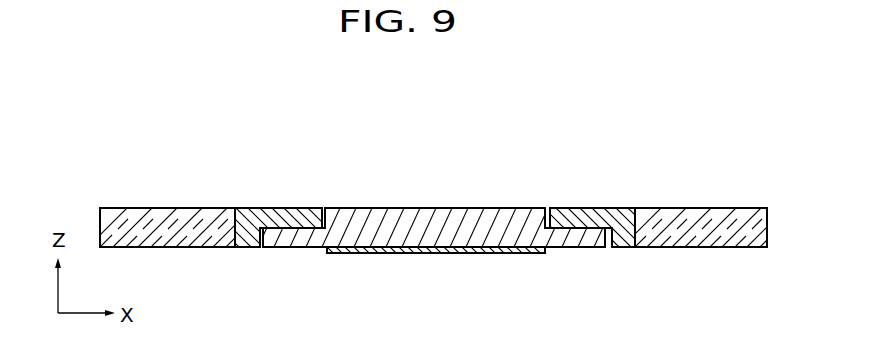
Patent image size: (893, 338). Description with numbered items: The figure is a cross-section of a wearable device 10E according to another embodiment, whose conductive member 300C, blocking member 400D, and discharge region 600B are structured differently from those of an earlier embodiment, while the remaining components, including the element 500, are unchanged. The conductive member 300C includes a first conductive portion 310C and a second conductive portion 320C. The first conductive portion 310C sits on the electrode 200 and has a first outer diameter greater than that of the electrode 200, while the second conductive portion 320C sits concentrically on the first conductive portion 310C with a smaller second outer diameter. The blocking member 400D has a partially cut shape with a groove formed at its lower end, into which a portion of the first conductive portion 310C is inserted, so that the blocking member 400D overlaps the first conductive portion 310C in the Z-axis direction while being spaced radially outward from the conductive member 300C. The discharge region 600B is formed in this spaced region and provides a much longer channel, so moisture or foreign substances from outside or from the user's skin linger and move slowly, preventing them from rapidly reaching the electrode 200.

The wearable device 10E is at (117, 116).
The electrode 200 is at (438, 253).
The conductive member 300C is at (394, 198).
The first conductive portion 310C is at (517, 238).
The second conductive portion 320C is at (442, 210).
The blocking member 400D is at (597, 215).
The frame 500 is at (683, 215).
The discharge region 600B is at (323, 200).